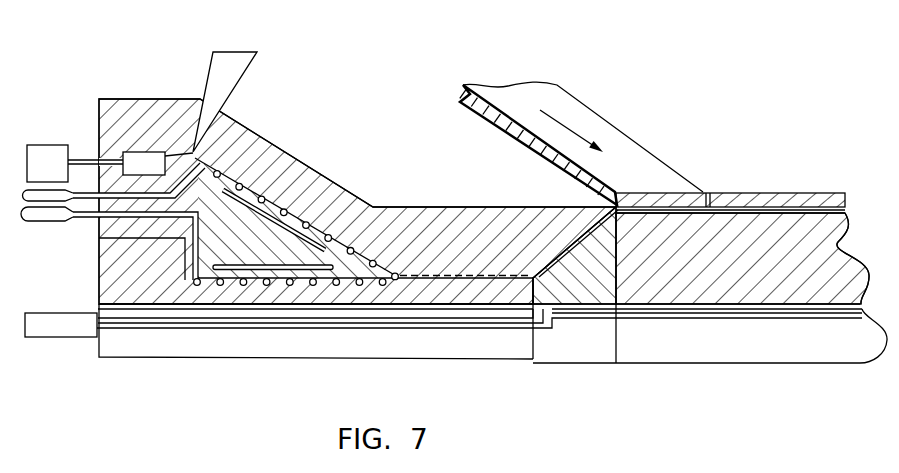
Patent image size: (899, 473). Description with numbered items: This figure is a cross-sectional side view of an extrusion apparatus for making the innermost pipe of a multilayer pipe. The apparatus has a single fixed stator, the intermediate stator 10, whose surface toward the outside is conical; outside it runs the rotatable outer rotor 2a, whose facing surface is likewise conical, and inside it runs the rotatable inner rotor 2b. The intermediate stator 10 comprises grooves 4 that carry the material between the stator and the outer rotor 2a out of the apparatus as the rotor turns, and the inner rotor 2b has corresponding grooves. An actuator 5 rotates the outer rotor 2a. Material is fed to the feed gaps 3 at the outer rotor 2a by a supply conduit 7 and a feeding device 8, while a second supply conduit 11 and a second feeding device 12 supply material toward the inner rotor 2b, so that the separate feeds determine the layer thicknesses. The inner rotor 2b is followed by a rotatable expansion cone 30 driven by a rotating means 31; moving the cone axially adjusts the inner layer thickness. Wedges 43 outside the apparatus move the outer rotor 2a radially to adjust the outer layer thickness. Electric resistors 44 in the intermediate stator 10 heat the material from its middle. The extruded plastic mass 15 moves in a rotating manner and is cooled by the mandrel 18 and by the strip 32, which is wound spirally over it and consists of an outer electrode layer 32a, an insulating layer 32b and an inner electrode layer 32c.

The outer rotor 2a is at (342, 197).
The inner rotor 2b is at (233, 297).
The feed gap 3 is at (452, 268).
The grooves 4 is at (328, 232).
The actuator 5 is at (45, 163).
The supply conduit 7 is at (123, 119).
The feeding device 8 is at (30, 203).
The intermediate stator 10 is at (240, 227).
The second supply conduit 11 is at (72, 87).
The second feeding device 12 is at (50, 222).
The plastic mass 15 is at (710, 193).
The mandrel 18 is at (723, 265).
The expansion cone 30 is at (592, 280).
The rotating means 31 is at (67, 330).
The strip 32 is at (634, 157).
The outer electrode layer 32a is at (745, 192).
The insulating layer 32b is at (775, 207).
The inner electrode layer 32c is at (827, 210).
The wedges 43 is at (222, 83).
The electric resistors 44 is at (282, 210).